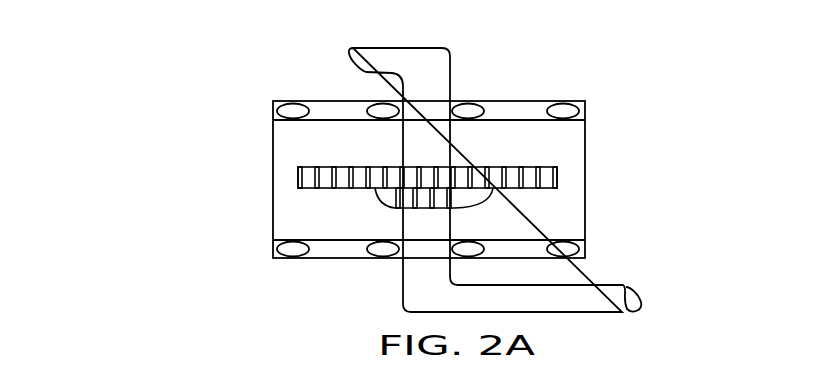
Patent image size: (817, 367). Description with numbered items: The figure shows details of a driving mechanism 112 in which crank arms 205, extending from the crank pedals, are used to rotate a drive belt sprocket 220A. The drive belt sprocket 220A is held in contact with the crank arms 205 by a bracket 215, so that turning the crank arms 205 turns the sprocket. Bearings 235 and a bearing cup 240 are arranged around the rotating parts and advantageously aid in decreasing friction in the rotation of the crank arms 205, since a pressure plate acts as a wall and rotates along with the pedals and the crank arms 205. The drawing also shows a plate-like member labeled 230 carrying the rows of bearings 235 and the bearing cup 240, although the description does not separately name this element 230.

The driving mechanism 112 is at (198, 61).
The crank arms 205 is at (400, 292).
The bracket 215 is at (378, 192).
The drive belt sprocket 220A is at (298, 172).
The plate 230 is at (585, 142).
The bearings 235 is at (585, 101).
The bearing cup 240 is at (563, 258).